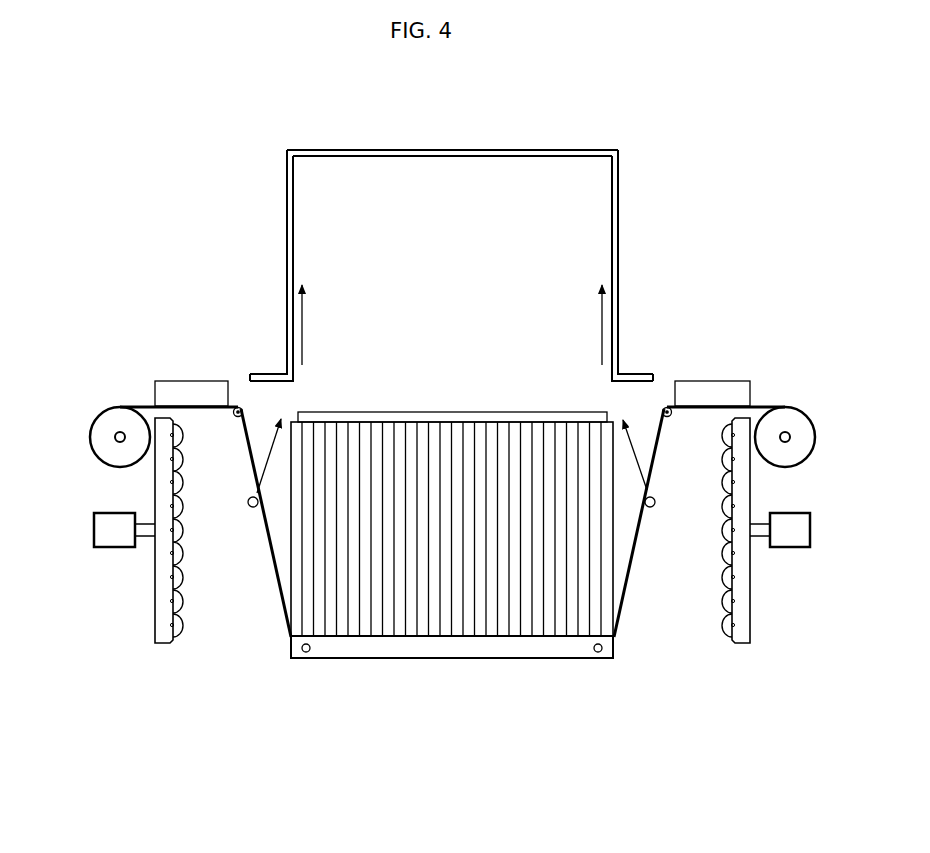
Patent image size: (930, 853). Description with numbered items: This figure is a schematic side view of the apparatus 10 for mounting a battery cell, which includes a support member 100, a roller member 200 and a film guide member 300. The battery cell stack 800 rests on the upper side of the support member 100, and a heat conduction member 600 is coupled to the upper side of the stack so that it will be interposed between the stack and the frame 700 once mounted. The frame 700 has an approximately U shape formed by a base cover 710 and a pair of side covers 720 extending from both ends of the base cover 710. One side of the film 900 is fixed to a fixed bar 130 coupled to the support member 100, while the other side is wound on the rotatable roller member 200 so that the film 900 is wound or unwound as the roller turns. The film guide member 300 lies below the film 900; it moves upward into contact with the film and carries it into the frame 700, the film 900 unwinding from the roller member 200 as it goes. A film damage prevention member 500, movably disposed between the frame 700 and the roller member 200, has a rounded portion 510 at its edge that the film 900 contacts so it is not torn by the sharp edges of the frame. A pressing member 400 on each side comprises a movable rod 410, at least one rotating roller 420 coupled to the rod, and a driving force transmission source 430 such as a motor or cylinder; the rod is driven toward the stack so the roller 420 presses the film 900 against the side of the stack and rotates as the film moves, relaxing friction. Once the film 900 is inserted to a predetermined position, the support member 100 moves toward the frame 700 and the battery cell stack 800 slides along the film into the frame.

The apparatus for mounting a battery cell 10 is at (277, 758).
The support member 100 is at (398, 665).
The fixed bar 130 is at (306, 652).
The roller member 200 is at (90, 437).
The film guide member 300 is at (248, 502).
The pressing member 400 is at (125, 673).
The movable rod 410 is at (155, 618).
The rotating roller 420 is at (183, 623).
The driving force transmission source 430 is at (94, 530).
The film damage prevention member 500 is at (179, 367).
The rounded portion 510 is at (228, 403).
The heat conduction member 600 is at (498, 412).
The frame 700 is at (637, 128).
The base cover 710 is at (573, 150).
The side covers 720 is at (620, 194).
The battery cell stack 800 is at (550, 622).
The film 900 is at (275, 570).